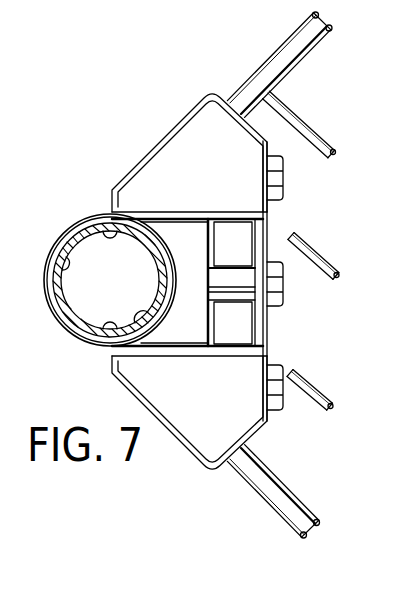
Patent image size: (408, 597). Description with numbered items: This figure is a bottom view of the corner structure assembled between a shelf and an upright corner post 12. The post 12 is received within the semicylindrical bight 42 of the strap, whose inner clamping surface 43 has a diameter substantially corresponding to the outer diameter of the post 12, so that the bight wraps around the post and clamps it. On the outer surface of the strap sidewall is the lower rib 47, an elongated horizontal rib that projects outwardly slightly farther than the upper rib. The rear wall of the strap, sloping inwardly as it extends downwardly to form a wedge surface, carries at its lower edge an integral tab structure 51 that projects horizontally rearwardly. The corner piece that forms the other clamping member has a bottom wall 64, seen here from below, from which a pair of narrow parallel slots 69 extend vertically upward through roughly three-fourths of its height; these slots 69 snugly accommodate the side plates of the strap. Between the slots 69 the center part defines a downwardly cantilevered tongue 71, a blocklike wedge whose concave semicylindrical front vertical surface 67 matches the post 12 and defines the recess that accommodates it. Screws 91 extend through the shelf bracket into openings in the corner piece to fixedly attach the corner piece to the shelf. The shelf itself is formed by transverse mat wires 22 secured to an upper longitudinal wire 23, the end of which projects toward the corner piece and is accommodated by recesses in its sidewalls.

The corner post 12 is at (73, 238).
The mat wires 22 is at (311, 249).
The upper longitudinal wire 23 is at (276, 500).
The semicylindrical bight 42 is at (62, 319).
The inner clamping surface 43 is at (62, 259).
The lower rib 47 is at (147, 214).
The tab structure 51 is at (235, 333).
The bottom wall 64 is at (189, 153).
The front vertical surface 67 is at (132, 340).
The slots 69 is at (167, 357).
The tongue 71 is at (185, 250).
The screws 91 is at (281, 174).